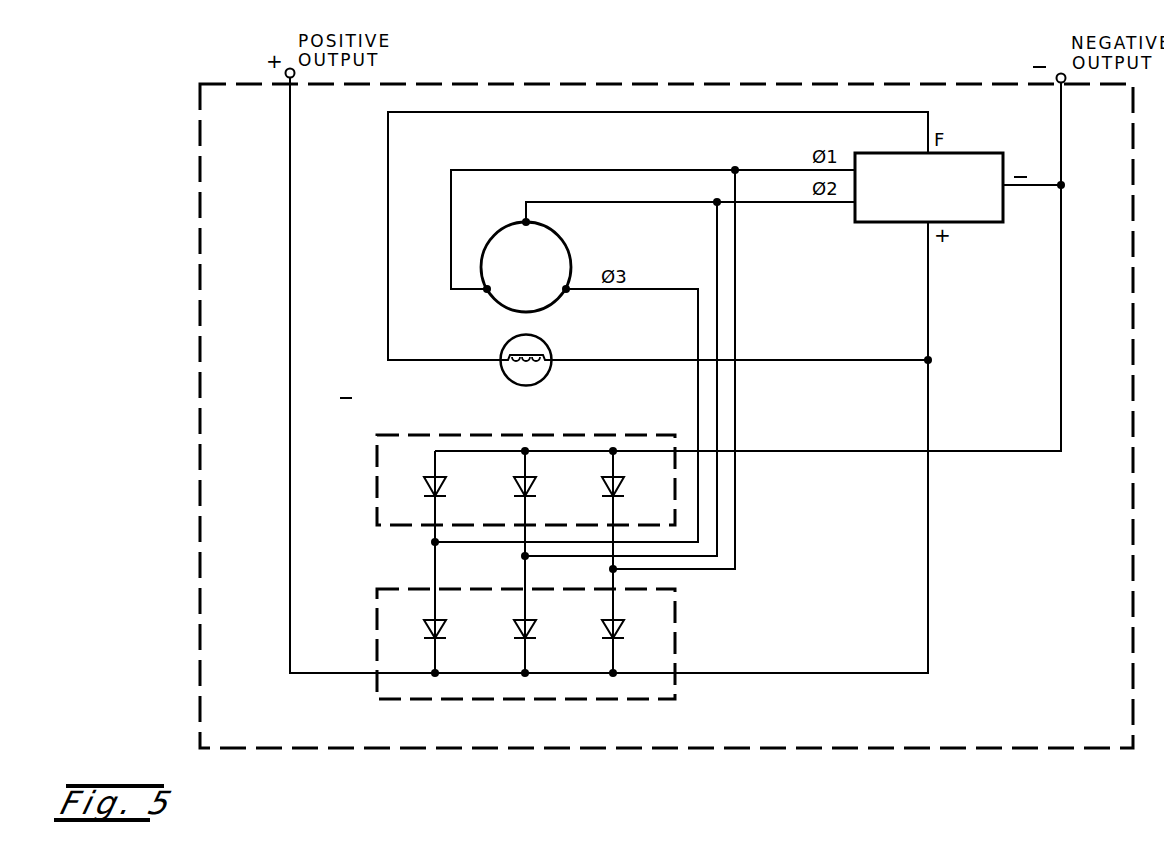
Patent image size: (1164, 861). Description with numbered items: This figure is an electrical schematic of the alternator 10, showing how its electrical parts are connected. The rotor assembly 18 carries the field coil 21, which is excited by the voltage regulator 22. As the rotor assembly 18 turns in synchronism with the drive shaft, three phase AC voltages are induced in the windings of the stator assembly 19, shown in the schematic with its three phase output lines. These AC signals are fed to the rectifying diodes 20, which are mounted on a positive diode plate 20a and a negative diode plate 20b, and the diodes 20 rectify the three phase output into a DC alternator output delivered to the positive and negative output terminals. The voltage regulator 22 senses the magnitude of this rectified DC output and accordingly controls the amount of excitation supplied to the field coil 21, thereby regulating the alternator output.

The alternator assembly 10 is at (690, 84).
The rotor assembly 18 is at (535, 342).
The stator assembly 19 is at (571, 255).
The rectifying diodes 20 is at (514, 480).
The positive diode plate 20a is at (675, 692).
The negative diode plate 20b is at (578, 435).
The field coil 21 is at (535, 362).
The voltage regulator 22 is at (983, 152).